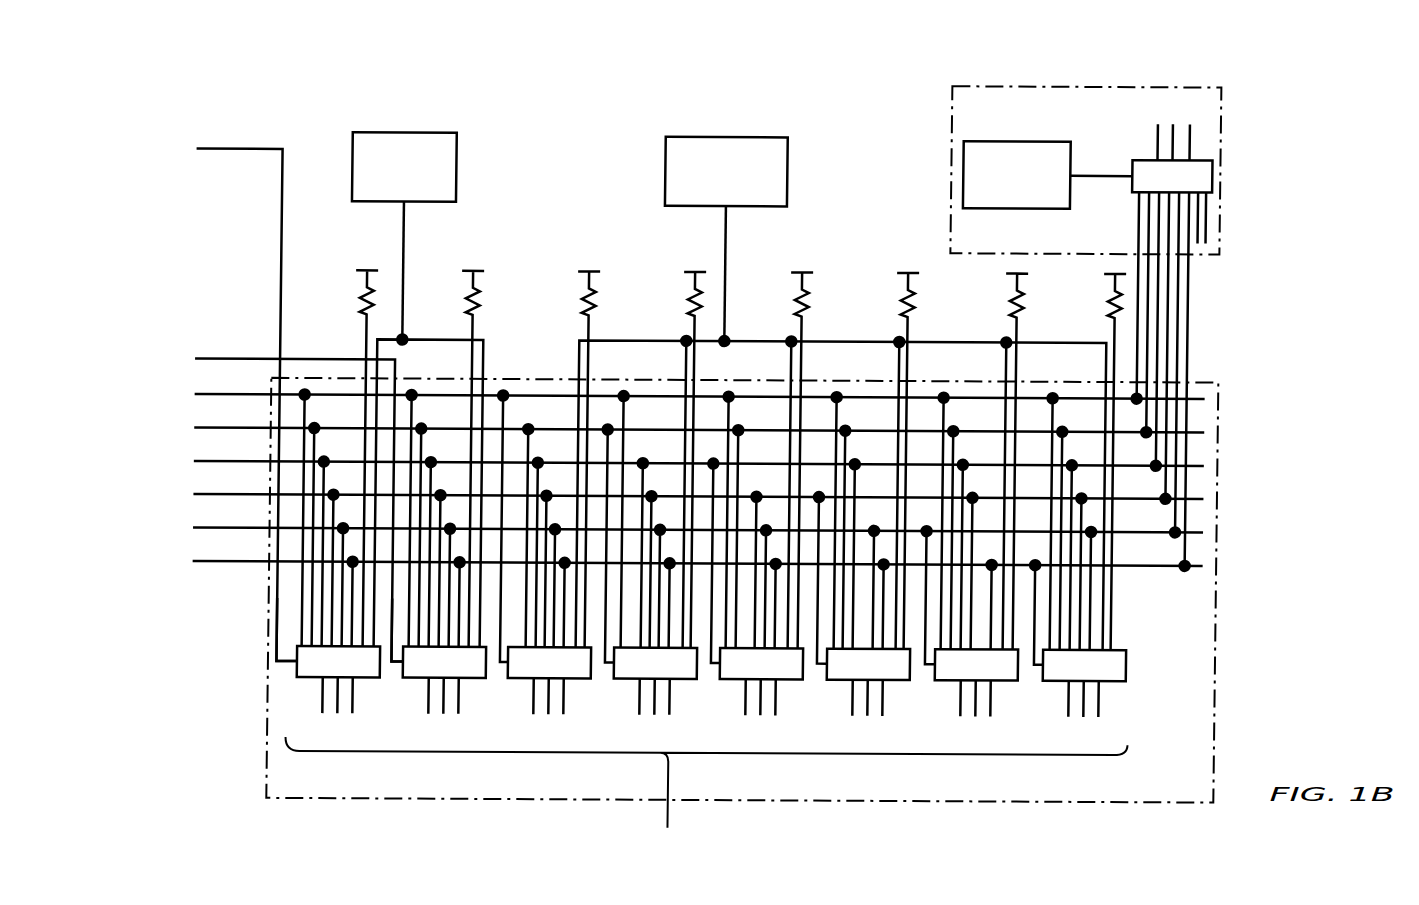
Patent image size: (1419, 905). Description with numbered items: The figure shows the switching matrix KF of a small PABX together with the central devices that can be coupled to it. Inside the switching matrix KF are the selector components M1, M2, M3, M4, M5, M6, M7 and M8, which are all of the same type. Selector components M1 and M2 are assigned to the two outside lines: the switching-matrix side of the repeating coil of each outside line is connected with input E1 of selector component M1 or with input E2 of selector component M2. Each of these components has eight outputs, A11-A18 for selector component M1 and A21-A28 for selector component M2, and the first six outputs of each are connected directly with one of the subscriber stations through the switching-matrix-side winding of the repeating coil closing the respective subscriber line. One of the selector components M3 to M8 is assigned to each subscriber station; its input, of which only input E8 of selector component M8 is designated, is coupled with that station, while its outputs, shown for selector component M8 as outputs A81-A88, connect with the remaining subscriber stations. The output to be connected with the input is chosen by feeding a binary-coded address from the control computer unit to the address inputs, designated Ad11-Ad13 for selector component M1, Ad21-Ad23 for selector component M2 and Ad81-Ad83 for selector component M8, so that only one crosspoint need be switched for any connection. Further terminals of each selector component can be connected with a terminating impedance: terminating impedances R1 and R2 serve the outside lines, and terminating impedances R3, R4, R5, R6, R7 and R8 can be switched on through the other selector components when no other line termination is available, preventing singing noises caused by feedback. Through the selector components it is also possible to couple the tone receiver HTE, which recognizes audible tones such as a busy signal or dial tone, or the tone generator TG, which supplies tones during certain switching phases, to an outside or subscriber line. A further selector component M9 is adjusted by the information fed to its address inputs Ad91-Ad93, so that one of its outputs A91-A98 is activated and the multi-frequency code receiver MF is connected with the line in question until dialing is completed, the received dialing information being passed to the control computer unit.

The tone receiver HTE is at (424, 134).
The tone generator TG is at (760, 137).
The multi-frequency code receiver MF is at (1008, 140).
The switching matrix KF is at (1218, 420).
The terminating impedance R1 is at (358, 299).
The terminating impedance R2 is at (464, 299).
The terminating impedance R3 is at (580, 299).
The terminating impedance R4 is at (686, 299).
The terminating impedance R5 is at (793, 299).
The terminating impedance R6 is at (899, 299).
The terminating impedance R7 is at (1008, 299).
The terminating impedance R8 is at (1106, 299).
The selector component M1 is at (338, 661).
The selector component M2 is at (444, 662).
The selector component M3 is at (549, 662).
The selector component M4 is at (655, 663).
The selector component M5 is at (761, 663).
The selector component M6 is at (868, 664).
The selector component M7 is at (976, 664).
The selector component M8 is at (1084, 665).
The selector component M9 is at (1172, 176).
The input E1 is at (291, 664).
The input E2 is at (399, 664).
The input E8 is at (1040, 664).
The address inputs Ad11-Ad13 is at (339, 707).
The address inputs Ad21-Ad23 is at (444, 708).
The address inputs Ad81-Ad83 is at (1085, 712).
The address inputs Ad91-Ad93 is at (1175, 132).
The outputs A11-A18 is at (307, 629).
The outputs A21-A28 is at (414, 629).
The outputs A81-A88 is at (1056, 629).
The outputs A91-A98 is at (1092, 234).